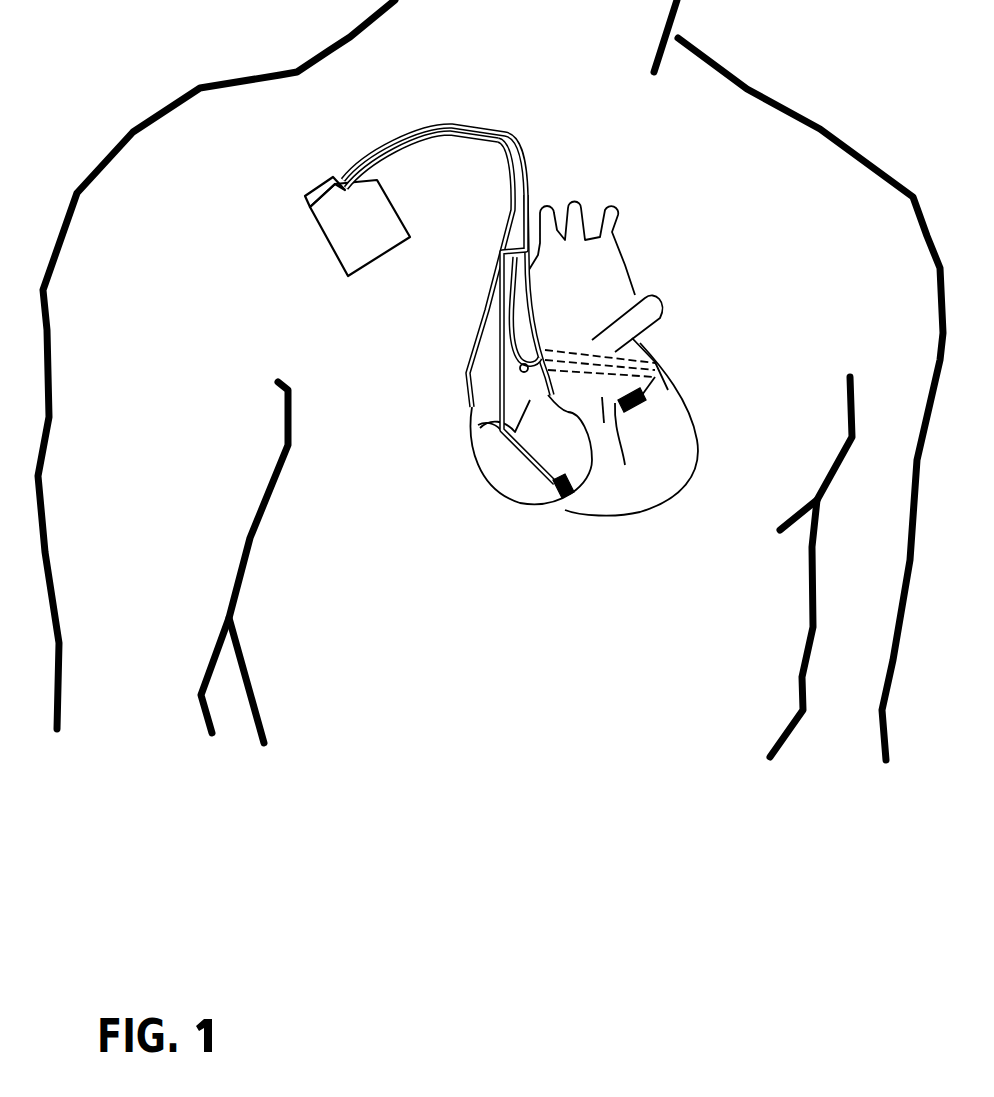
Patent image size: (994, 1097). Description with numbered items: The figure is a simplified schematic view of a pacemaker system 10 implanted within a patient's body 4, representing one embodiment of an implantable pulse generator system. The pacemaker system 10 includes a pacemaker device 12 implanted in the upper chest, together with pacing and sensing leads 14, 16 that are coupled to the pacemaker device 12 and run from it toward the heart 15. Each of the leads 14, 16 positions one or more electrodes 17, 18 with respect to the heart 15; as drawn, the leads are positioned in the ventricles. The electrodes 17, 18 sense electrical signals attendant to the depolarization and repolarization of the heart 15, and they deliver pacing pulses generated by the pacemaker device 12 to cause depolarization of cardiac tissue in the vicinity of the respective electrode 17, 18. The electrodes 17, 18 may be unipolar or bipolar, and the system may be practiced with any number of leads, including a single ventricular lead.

The patient's body 4 is at (117, 145).
The pacemaker system 10 is at (303, 265).
The pacemaker device 12 is at (375, 248).
The pacing and sensing lead 14 is at (530, 173).
The pacing and sensing lead 16 is at (507, 195).
The heart 15 is at (708, 428).
The electrode 17 is at (660, 377).
The electrode 18 is at (556, 500).